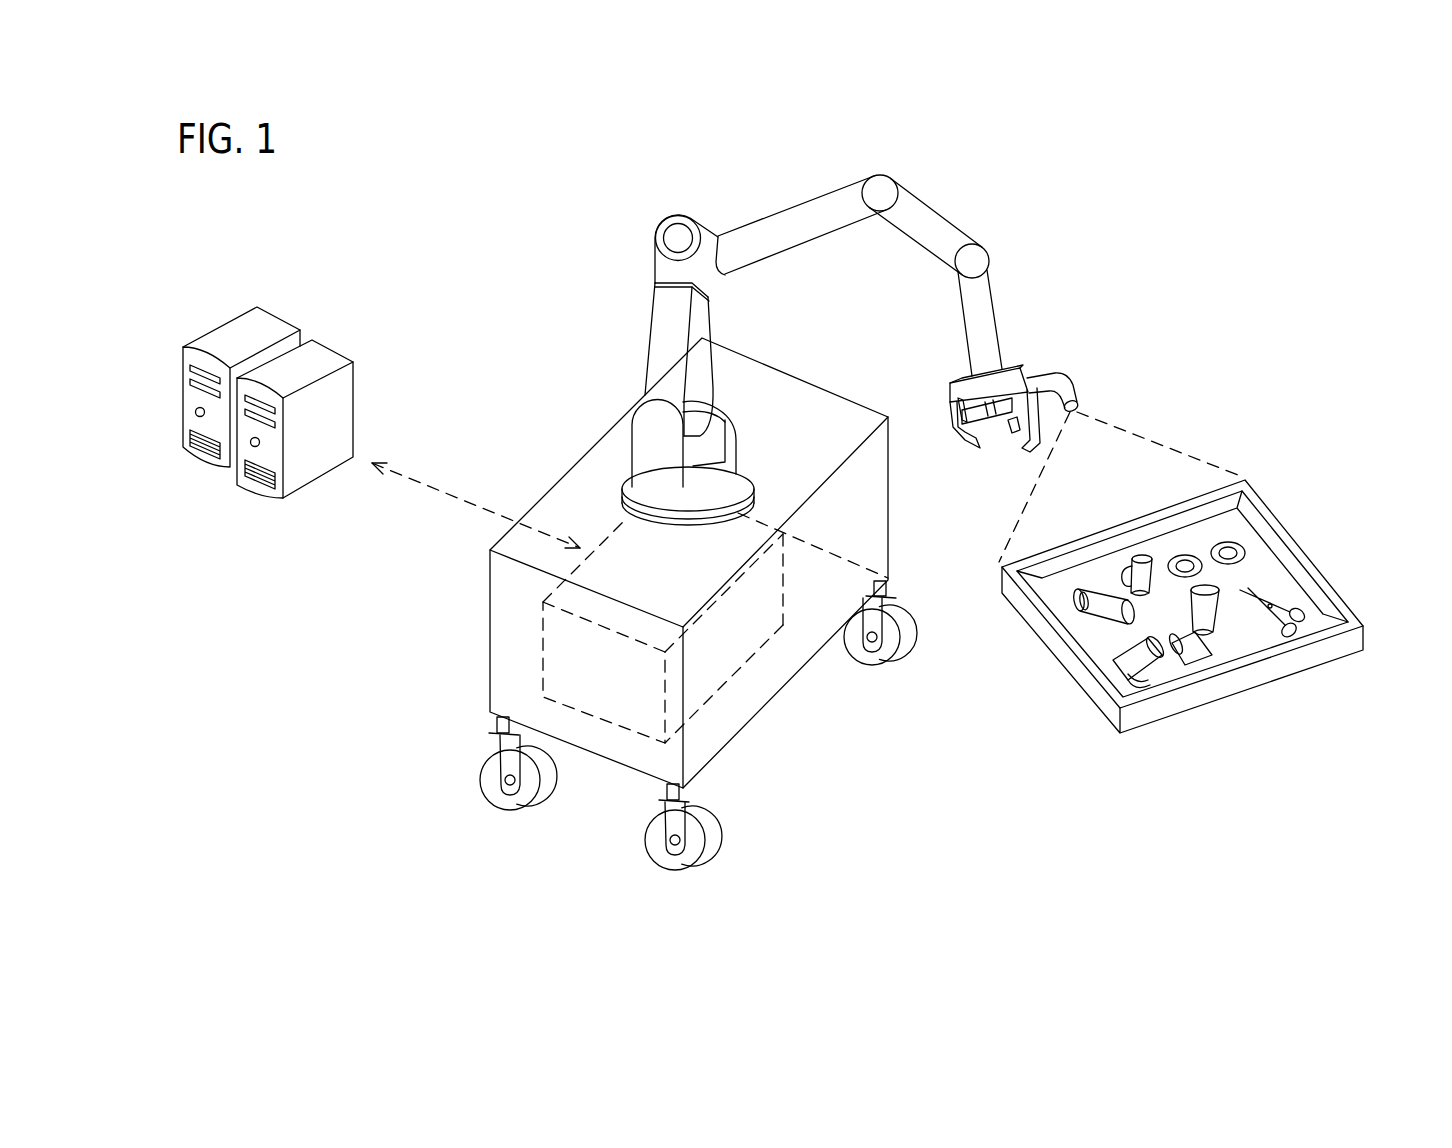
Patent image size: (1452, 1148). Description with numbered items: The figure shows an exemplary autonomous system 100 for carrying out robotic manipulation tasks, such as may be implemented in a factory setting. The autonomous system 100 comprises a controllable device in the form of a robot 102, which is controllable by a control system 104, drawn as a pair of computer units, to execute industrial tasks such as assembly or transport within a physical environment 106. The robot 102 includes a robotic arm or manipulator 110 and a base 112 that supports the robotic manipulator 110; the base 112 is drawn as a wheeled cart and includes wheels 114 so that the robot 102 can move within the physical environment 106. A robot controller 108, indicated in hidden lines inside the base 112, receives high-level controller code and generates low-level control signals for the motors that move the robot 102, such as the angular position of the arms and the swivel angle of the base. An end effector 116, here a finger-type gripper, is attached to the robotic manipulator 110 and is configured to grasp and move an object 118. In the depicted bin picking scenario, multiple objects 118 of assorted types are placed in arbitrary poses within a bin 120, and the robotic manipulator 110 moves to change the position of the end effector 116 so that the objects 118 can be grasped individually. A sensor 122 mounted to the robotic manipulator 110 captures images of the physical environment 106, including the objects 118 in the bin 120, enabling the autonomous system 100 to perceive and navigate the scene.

The autonomous system 100 is at (1259, 175).
The robot 102 is at (797, 207).
The control system 104 is at (278, 318).
The physical environment 106 is at (1205, 426).
The robot controller 108 is at (543, 628).
The robotic manipulator 110 is at (958, 227).
The base 112 is at (598, 486).
The wheels 114 is at (723, 830).
The end effector 116 is at (1013, 440).
The objects 118 is at (1248, 556).
The bin 120 is at (1062, 664).
The sensor 122 is at (1060, 378).